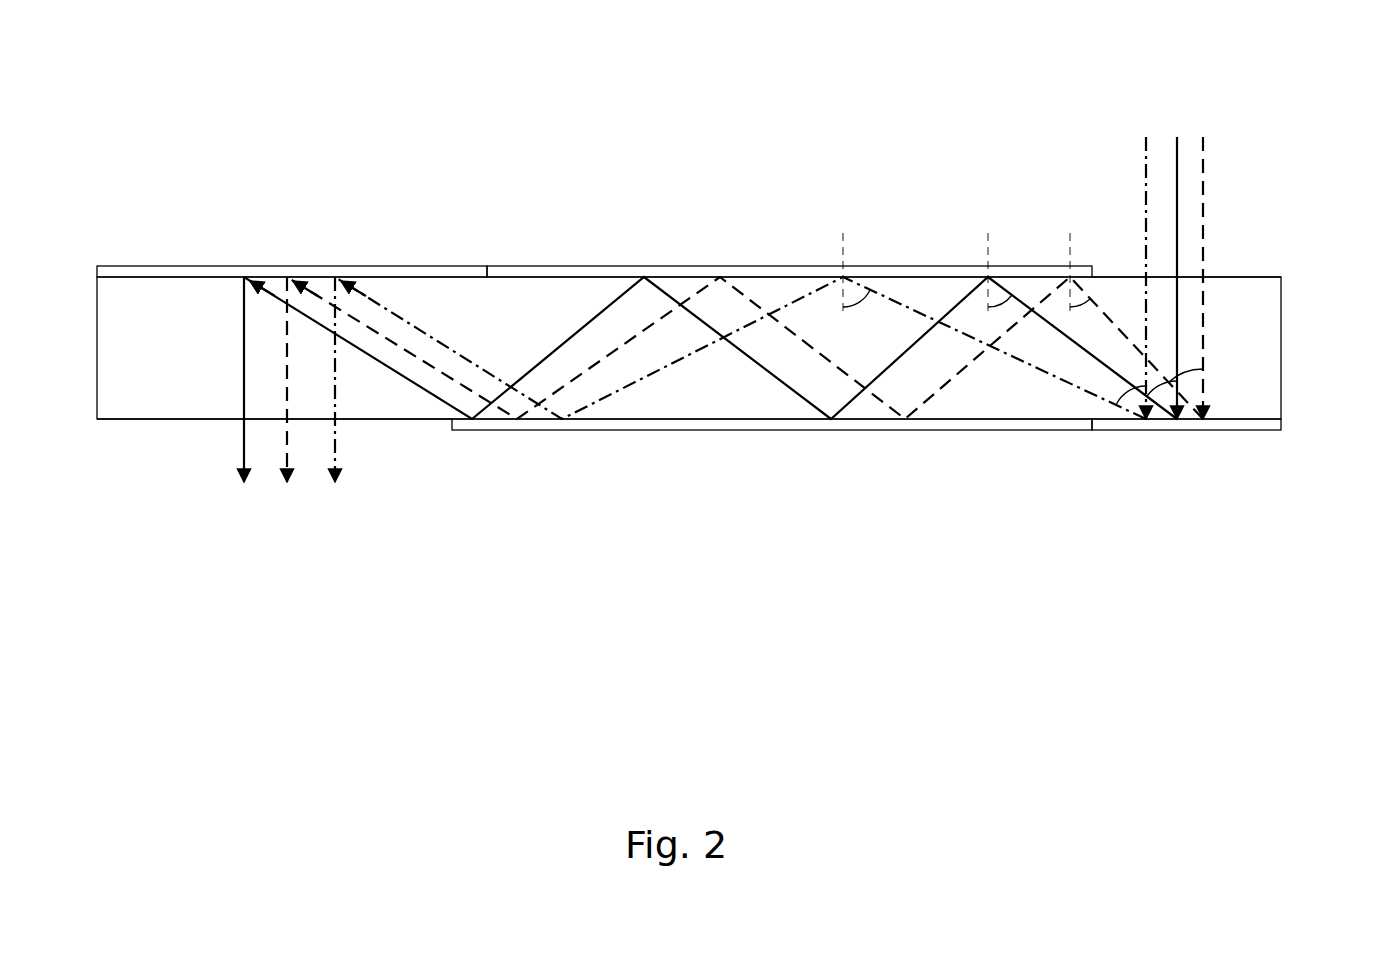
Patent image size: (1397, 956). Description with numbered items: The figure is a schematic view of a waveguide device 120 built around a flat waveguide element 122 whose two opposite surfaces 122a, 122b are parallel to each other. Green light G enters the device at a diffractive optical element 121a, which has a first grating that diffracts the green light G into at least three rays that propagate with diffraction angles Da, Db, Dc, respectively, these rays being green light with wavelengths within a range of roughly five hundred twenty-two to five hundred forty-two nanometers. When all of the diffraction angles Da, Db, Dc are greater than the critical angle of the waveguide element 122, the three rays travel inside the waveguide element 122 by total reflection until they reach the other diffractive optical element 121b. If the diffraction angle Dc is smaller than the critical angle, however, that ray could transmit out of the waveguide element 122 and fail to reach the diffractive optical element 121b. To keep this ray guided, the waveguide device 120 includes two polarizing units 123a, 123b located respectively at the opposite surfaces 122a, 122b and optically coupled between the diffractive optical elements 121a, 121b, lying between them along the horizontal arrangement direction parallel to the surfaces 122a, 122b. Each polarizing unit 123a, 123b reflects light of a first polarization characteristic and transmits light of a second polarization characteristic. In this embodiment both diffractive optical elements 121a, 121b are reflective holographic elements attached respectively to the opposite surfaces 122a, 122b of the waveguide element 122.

The waveguide device 120 is at (93, 55).
The diffractive optical element 121a is at (1262, 432).
The diffractive optical element 121b is at (187, 270).
The waveguide element 122 is at (1282, 322).
The surface 122a is at (1240, 277).
The surface 122b is at (412, 422).
The polarizing unit 123a is at (773, 270).
The polarizing unit 123b is at (695, 432).
The diffraction angle Da is at (862, 300).
The diffraction angle Db is at (1004, 303).
The diffraction angle Dc is at (1085, 305).
The green light G is at (726, 308).